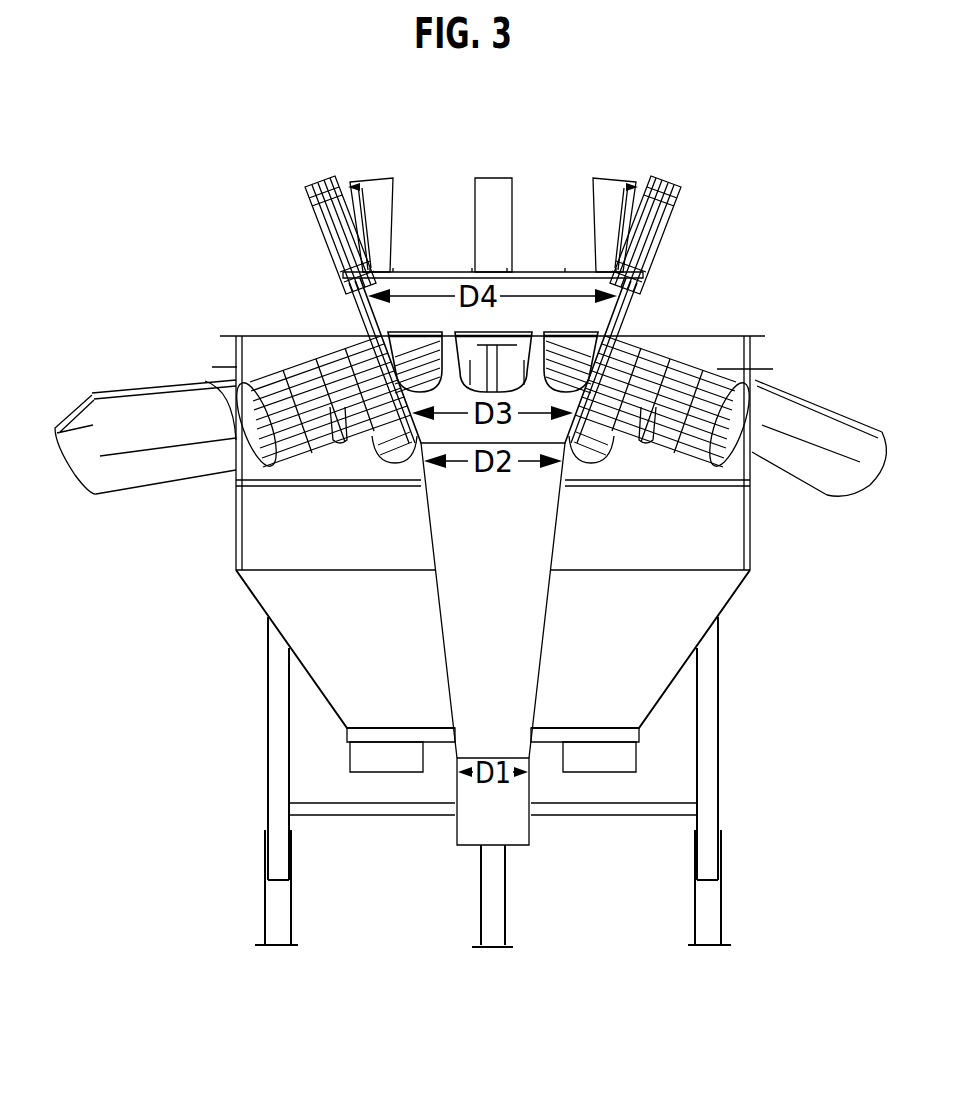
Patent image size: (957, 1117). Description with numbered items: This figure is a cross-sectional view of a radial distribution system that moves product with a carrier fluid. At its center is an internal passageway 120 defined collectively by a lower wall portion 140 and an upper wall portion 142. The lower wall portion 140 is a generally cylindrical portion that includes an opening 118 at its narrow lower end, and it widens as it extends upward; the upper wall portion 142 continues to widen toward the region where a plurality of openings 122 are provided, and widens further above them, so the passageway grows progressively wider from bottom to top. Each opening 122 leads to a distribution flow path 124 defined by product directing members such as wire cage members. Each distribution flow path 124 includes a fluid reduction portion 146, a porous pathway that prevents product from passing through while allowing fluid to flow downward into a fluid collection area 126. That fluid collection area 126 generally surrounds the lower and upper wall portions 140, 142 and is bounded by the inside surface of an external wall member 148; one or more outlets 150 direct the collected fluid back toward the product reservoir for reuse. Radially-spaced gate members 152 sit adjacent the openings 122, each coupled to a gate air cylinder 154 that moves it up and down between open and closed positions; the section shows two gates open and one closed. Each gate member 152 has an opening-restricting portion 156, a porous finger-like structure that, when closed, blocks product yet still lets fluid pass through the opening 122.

The opening 118 is at (517, 843).
The internal passageway 120 is at (517, 569).
The openings 122 is at (405, 332).
The distribution flow path 124 is at (270, 383).
The fluid collection area 126 is at (306, 544).
The lower wall portion 140 is at (548, 617).
The upper wall portion 142 is at (622, 318).
The fluid reduction portion 146 is at (312, 442).
The external wall member 148 is at (718, 612).
The outlet 150 is at (380, 768).
The gate member 152 is at (375, 178).
The gate air cylinder 154 is at (325, 243).
The opening-restricting portion 156 is at (508, 348).